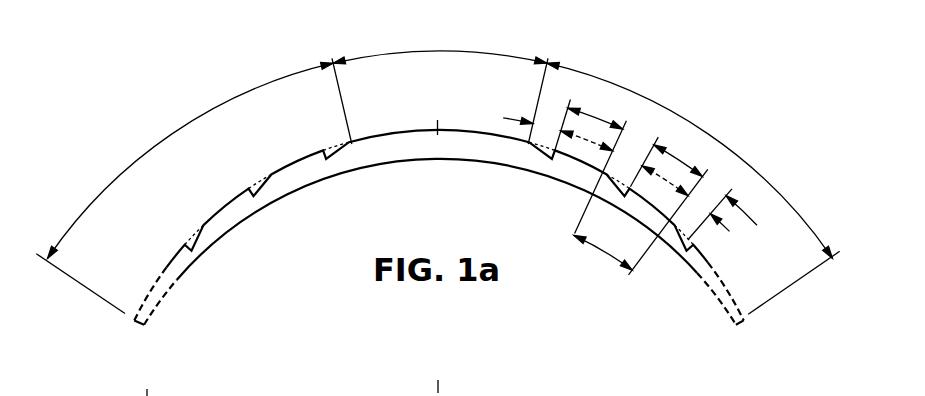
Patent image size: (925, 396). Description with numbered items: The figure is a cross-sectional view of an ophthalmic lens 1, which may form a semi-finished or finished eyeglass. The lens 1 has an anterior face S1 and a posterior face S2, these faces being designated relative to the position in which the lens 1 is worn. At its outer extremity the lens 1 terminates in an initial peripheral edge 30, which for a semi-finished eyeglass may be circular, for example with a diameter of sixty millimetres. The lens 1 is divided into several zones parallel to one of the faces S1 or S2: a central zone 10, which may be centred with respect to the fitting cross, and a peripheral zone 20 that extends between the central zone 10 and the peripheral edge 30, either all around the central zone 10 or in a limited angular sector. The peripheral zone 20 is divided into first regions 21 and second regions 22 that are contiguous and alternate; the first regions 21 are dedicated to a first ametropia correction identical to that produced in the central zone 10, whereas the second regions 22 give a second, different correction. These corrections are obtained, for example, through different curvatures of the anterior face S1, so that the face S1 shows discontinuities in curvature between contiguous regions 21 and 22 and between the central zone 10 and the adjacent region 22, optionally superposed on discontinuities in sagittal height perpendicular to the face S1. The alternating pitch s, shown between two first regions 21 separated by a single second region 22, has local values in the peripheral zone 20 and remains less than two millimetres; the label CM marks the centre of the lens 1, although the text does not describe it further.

The ophthalmic lens 1 is at (450, 226).
The central zone 10 is at (440, 85).
The peripheral zone 20 is at (437, 189).
The first regions 21 is at (674, 159).
The second regions 22 is at (617, 186).
The initial peripheral edge 30 is at (740, 327).
The center mark CM is at (435, 127).
The anterior face S1 is at (494, 125).
The posterior face S2 is at (497, 170).
The alternating pitch s is at (603, 255).